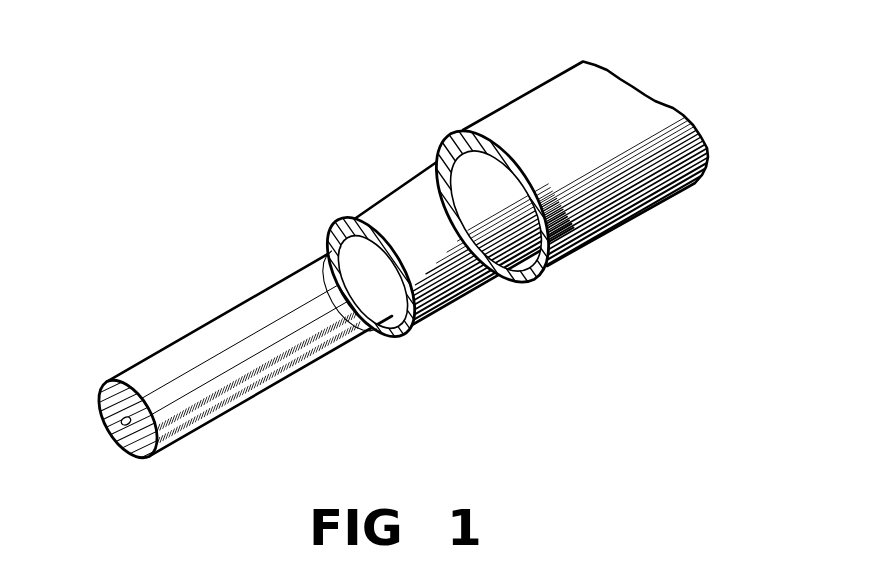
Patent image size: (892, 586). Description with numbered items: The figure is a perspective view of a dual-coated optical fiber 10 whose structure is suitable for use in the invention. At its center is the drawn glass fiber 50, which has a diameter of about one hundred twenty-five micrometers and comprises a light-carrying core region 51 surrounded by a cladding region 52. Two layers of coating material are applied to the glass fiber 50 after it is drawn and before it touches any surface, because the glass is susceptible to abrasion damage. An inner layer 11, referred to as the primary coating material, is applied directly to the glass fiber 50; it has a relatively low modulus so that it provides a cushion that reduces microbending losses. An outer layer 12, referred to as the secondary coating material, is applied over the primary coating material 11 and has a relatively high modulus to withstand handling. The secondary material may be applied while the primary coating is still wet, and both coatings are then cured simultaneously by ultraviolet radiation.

The optical fiber 10 is at (533, 66).
The inner layer 11 is at (408, 189).
The outer layer 12 is at (490, 122).
The glass fiber 50 is at (220, 294).
The core region 51 is at (124, 419).
The cladding region 52 is at (108, 390).